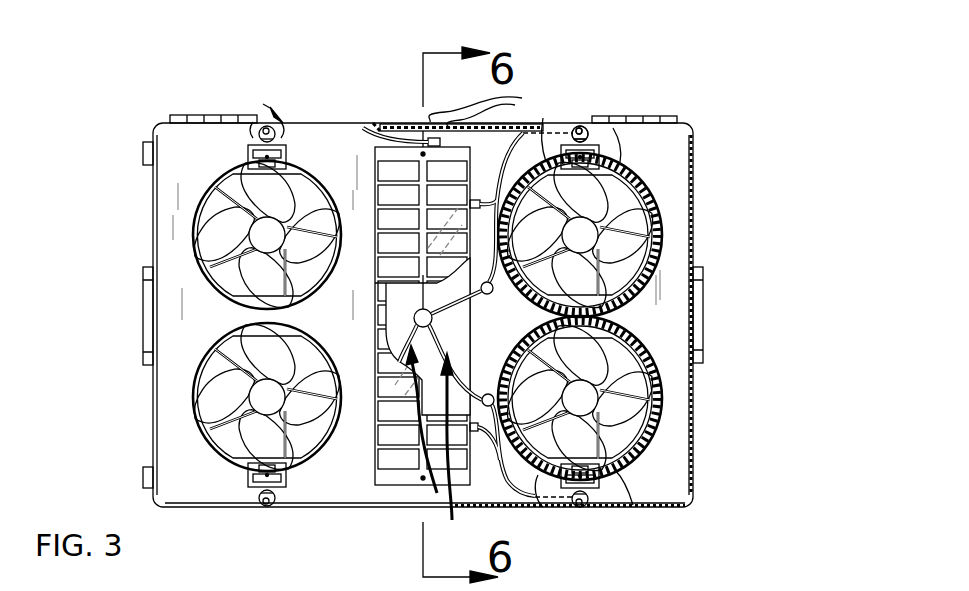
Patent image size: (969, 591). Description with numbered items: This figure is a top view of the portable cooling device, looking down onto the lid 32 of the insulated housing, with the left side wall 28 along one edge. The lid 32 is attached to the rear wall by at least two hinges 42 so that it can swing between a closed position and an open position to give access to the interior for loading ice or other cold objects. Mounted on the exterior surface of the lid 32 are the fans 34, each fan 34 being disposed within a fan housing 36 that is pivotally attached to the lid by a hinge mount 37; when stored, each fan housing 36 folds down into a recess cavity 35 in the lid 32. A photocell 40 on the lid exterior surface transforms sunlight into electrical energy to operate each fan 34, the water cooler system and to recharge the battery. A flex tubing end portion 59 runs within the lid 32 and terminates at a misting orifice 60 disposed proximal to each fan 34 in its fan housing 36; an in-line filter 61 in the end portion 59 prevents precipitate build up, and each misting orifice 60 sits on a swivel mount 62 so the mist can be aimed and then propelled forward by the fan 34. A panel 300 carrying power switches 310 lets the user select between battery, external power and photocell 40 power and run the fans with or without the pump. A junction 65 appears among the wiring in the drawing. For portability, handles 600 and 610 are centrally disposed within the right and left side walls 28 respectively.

The left side wall 28 is at (115, 240).
The lid 32 is at (332, 482).
The fan 34 is at (585, 236).
The recess cavity 35 is at (635, 218).
The fan housing 36 is at (622, 183).
The hinge mount 37 is at (605, 156).
The photocell 40 is at (387, 480).
The hinges 42 is at (213, 117).
The flex tubing end portion 59 is at (437, 487).
The misting orifice 60 is at (580, 125).
The in-line filter 61 is at (360, 127).
The swivel mount 62 is at (593, 118).
The wiring junction hub 65 is at (414, 317).
The panel 300 is at (392, 122).
The power switches 310 is at (390, 122).
The handle 600 is at (700, 343).
The handle 610 is at (148, 300).